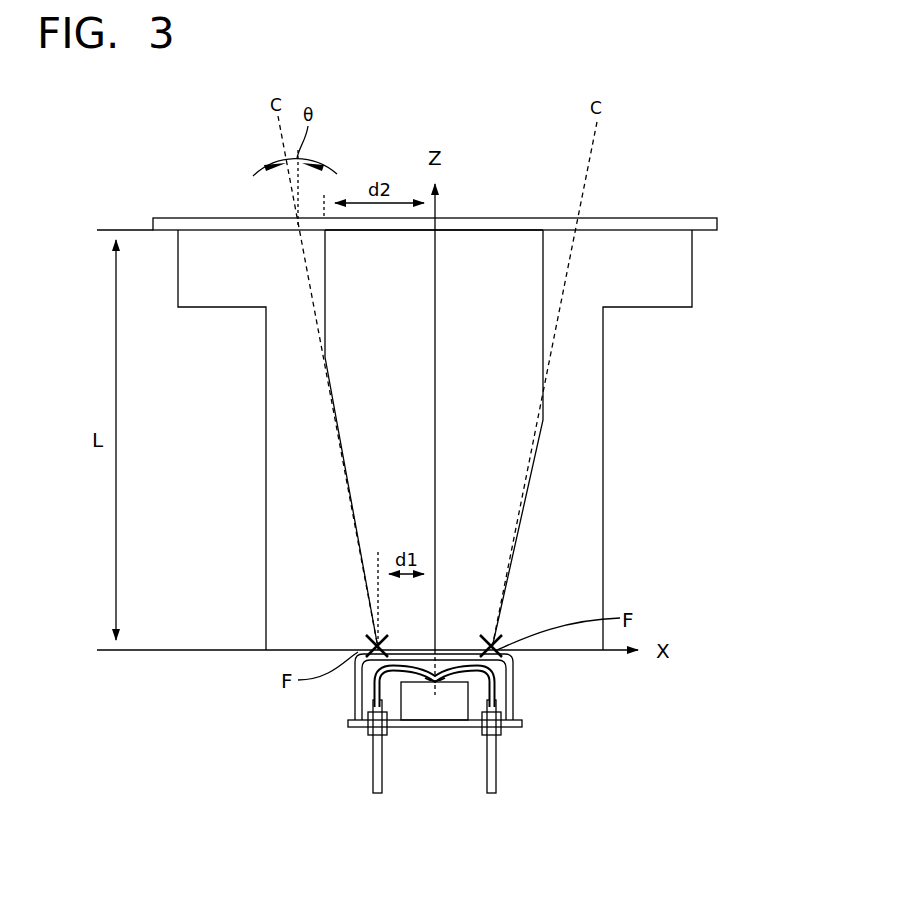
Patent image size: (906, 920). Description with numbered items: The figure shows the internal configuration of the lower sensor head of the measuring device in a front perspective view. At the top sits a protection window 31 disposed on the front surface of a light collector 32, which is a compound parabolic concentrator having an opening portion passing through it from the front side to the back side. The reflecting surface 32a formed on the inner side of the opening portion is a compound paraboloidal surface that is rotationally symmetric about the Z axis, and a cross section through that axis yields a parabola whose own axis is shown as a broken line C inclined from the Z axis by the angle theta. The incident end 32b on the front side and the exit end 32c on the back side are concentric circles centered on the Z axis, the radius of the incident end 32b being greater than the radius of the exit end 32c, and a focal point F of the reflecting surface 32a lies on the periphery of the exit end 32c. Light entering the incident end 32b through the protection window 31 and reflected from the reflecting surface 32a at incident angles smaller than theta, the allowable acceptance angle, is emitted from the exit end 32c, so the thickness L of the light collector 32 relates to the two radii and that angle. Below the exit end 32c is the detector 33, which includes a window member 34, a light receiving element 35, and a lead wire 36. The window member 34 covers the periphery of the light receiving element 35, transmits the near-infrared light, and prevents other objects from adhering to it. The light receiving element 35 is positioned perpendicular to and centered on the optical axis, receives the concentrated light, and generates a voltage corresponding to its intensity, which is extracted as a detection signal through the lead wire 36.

The protection window 31 is at (627, 218).
The light collector 32 is at (692, 283).
The reflecting surface 32a is at (544, 427).
The incident end 32b is at (473, 230).
The exit end 32c is at (492, 645).
The detector 33 is at (515, 700).
The window member 34 is at (495, 665).
The light receiving element 35 is at (430, 675).
The lead wire 36 is at (497, 765).